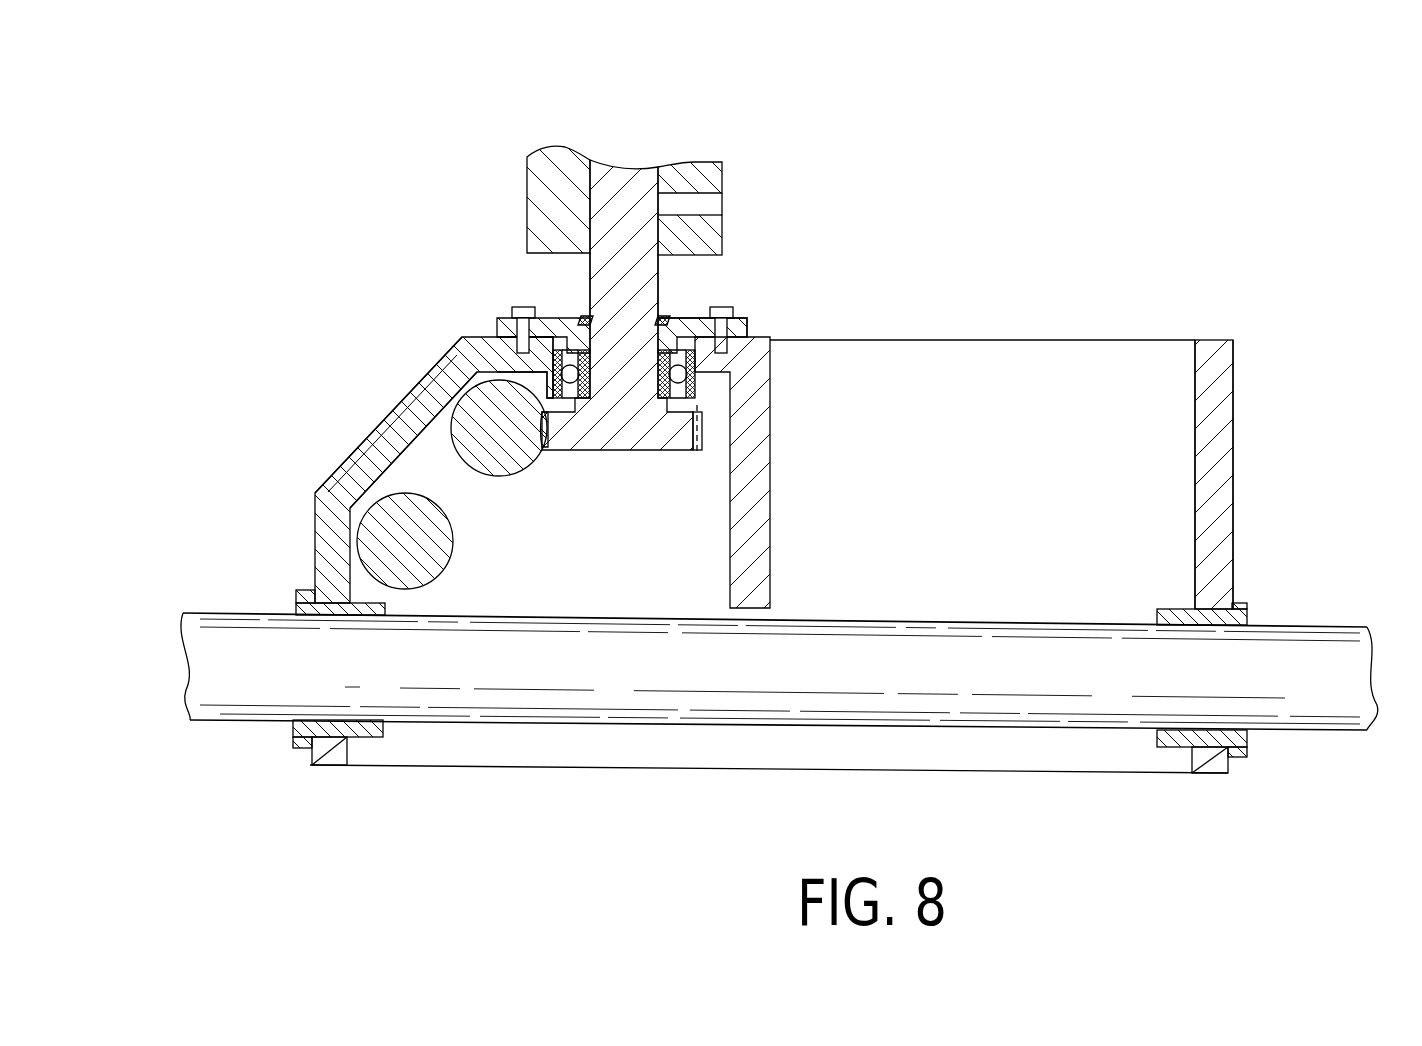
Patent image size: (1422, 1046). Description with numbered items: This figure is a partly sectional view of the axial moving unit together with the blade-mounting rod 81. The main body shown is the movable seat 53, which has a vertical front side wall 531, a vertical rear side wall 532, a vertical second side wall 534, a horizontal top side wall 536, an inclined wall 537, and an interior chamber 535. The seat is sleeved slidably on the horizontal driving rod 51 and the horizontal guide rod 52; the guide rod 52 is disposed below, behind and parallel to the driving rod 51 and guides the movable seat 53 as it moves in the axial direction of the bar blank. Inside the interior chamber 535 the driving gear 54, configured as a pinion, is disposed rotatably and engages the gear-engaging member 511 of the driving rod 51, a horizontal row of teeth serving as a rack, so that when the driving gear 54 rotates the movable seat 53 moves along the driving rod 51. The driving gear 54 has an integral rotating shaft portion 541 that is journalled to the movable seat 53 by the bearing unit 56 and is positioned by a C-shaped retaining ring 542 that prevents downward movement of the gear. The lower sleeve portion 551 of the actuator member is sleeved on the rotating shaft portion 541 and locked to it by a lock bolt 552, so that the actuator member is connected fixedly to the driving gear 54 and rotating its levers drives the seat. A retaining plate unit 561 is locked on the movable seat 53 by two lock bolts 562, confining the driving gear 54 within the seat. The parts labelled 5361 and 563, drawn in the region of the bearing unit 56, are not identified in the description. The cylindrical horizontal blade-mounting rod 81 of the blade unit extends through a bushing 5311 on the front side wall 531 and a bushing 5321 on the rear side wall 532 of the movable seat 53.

The driving rod 51 is at (483, 403).
The gear-engaging member 511 is at (547, 452).
The guide rod 52 is at (398, 505).
The movable seat 53 is at (1238, 384).
The front side wall 531 is at (1218, 444).
The bushing 5311 is at (1240, 612).
The rear side wall 532 is at (322, 528).
The bushing 5321 is at (296, 605).
The second side wall 534 is at (1008, 339).
The interior chamber 535 is at (700, 590).
The top side wall 536 is at (487, 343).
The bearing 5361 is at (690, 395).
The inclined wall 537 is at (410, 390).
The driving gear 54 is at (602, 442).
The rotating shaft portion 541 is at (660, 285).
The C-shaped retaining ring 542 is at (588, 315).
The lower sleeve portion 551 is at (673, 172).
The lock bolt 552 is at (690, 197).
The bearing unit 56 is at (767, 367).
The retaining plate unit 561 is at (733, 373).
The lock bolts 562 is at (728, 300).
The bearing 563 is at (740, 400).
The blade-mounting rod 81 is at (1310, 713).